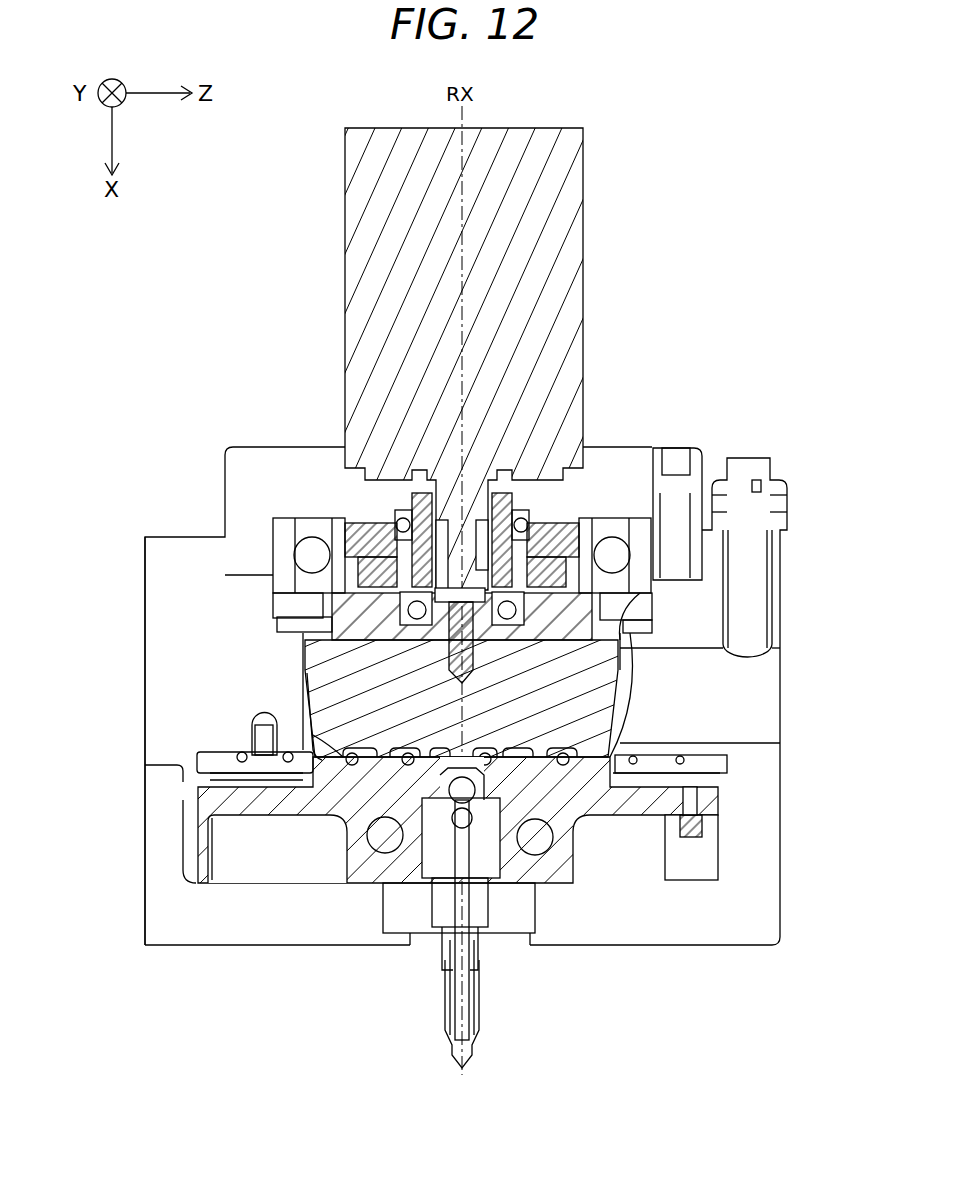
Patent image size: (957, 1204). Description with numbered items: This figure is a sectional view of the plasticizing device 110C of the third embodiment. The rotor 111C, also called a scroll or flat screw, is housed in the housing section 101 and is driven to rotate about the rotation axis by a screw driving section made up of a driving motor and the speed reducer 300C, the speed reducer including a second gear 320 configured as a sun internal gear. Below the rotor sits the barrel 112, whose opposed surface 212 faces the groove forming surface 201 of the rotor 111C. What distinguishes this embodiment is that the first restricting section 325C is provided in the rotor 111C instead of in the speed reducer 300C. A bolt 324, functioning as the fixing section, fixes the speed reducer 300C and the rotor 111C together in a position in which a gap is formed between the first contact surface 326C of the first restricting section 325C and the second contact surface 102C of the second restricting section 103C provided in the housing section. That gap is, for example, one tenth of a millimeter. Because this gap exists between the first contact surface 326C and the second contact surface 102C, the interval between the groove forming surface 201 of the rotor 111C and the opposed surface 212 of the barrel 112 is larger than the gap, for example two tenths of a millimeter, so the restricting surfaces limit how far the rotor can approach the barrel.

The plasticizing device 110C is at (659, 162).
The speed reducer 300C is at (256, 388).
The second gear 320 is at (590, 541).
The housing section 101 is at (182, 598).
The first restricting section 325C is at (592, 644).
The second contact surface 102C is at (622, 645).
The bolt 324 is at (448, 668).
The rotor 111C is at (303, 698).
The barrel 112 is at (333, 736).
The first contact surface 326C is at (633, 653).
The second restricting section 103C is at (633, 670).
The opposed surface 212 is at (567, 757).
The groove forming surface 201 is at (588, 763).